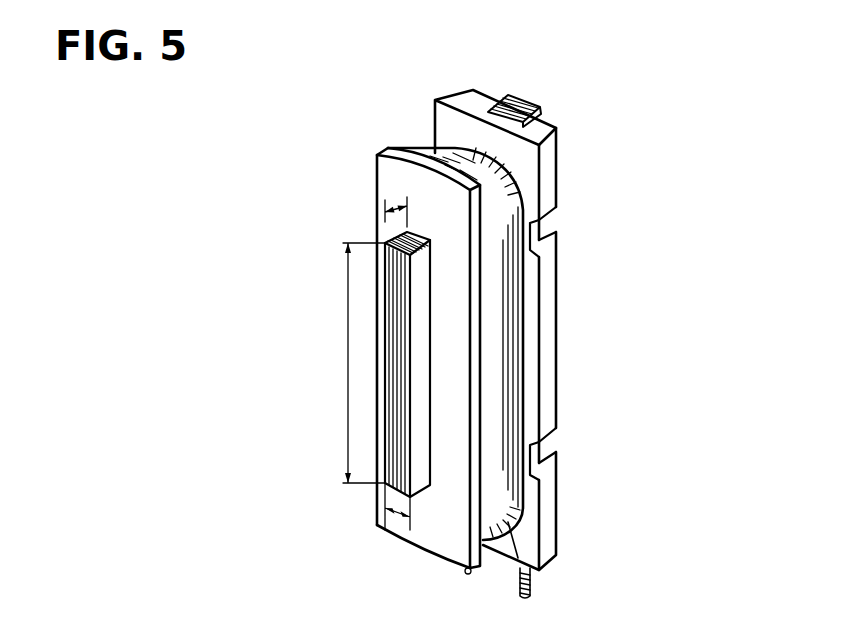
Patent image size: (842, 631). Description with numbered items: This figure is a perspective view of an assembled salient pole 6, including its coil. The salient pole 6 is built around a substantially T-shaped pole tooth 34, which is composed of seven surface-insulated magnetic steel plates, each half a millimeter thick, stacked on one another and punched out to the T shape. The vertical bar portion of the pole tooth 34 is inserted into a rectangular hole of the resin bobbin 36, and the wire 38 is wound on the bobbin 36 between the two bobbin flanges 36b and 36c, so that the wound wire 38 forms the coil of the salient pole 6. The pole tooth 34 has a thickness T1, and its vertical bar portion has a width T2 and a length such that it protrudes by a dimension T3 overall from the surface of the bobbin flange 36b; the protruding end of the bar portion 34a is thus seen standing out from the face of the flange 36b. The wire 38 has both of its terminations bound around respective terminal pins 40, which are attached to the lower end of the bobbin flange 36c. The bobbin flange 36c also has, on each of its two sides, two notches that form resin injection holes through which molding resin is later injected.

The salient pole 6 is at (606, 165).
The pole tooth 34 is at (541, 95).
The engaging projection 34a is at (383, 423).
The resin bobbin 36 is at (567, 367).
The bobbin flange 36b is at (447, 533).
The bobbin flange 36c is at (541, 305).
The wire 38 is at (427, 153).
The terminal pin 40 is at (470, 575).
The thickness T1 is at (397, 521).
The width T2 is at (348, 363).
The protrusion dimension T3 is at (395, 210).